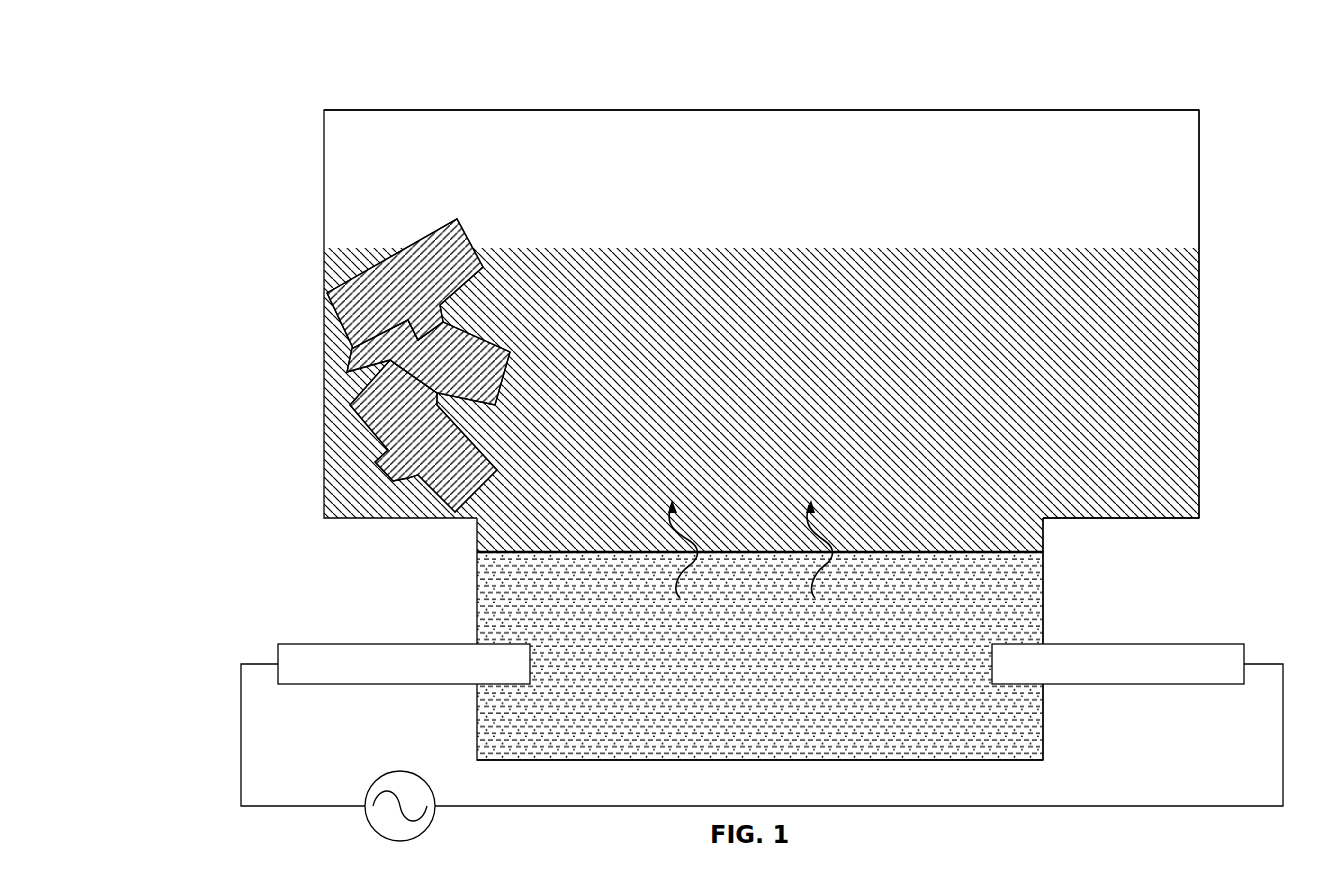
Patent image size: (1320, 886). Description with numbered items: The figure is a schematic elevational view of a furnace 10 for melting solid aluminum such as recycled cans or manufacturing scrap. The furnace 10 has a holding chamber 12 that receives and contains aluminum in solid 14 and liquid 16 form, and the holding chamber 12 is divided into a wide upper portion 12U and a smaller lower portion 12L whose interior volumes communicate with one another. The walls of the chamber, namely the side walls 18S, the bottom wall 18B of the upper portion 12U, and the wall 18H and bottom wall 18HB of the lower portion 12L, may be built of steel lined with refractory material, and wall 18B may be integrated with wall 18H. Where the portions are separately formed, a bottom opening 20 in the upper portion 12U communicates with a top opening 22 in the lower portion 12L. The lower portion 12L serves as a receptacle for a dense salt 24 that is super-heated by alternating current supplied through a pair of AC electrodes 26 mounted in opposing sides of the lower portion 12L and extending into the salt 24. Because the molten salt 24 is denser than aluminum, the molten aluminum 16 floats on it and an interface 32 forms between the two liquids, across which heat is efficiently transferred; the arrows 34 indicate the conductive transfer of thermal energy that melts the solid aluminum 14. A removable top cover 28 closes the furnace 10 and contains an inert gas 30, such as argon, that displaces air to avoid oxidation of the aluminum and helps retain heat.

The furnace 10 is at (265, 72).
The holding chamber 12 is at (745, 438).
The upper portion 12U is at (1206, 326).
The lower portion 12L is at (470, 711).
The solid aluminum 14 is at (433, 232).
The molten aluminum 16 is at (724, 395).
The side wall 18S is at (1200, 411).
The bottom wall 18B is at (1140, 518).
The wall 18H is at (1040, 725).
The bottom wall 18HB is at (887, 762).
The bottom opening 20 is at (992, 538).
The top opening 22 is at (503, 563).
The salt 24 is at (797, 676).
The AC electrodes 26 is at (322, 644).
The top cover 28 is at (847, 110).
The inert gas 30 is at (720, 181).
The interface 32 is at (990, 555).
The arrows 34 is at (672, 568).